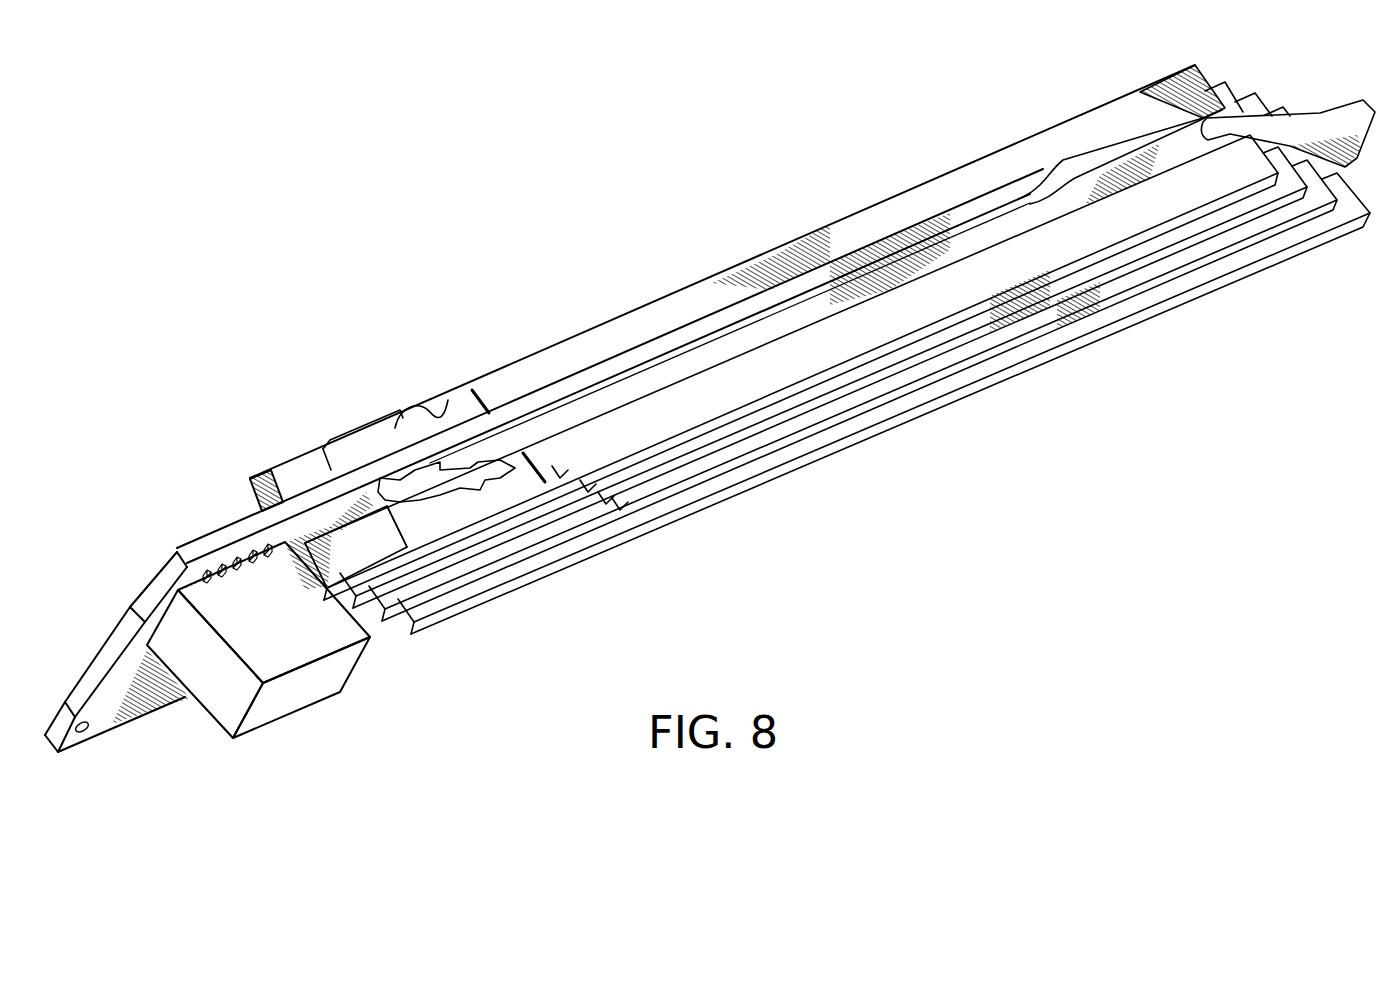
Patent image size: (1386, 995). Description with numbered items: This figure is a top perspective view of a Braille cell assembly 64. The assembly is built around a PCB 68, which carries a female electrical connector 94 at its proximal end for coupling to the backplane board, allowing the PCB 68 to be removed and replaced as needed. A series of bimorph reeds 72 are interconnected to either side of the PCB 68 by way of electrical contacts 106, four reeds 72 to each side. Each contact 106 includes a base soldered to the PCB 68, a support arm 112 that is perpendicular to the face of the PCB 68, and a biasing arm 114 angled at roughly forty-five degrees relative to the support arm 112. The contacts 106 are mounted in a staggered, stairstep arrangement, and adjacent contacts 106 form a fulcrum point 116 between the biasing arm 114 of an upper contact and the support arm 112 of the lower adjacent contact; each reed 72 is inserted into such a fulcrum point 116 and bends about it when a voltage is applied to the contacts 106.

The Braille cell assembly 64 is at (600, 150).
The PCB 68 is at (225, 540).
The bimorph reed 72 is at (832, 252).
The female electrical connector 94 is at (293, 695).
The electrical contact 106 is at (380, 453).
The support arm 112 is at (426, 414).
The biasing arm 114 is at (456, 396).
The fulcrum point 116 is at (612, 493).